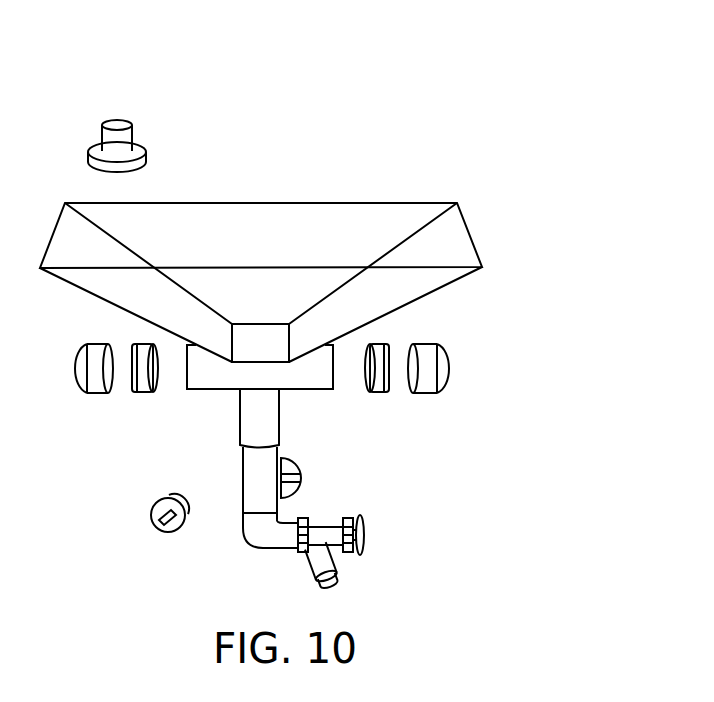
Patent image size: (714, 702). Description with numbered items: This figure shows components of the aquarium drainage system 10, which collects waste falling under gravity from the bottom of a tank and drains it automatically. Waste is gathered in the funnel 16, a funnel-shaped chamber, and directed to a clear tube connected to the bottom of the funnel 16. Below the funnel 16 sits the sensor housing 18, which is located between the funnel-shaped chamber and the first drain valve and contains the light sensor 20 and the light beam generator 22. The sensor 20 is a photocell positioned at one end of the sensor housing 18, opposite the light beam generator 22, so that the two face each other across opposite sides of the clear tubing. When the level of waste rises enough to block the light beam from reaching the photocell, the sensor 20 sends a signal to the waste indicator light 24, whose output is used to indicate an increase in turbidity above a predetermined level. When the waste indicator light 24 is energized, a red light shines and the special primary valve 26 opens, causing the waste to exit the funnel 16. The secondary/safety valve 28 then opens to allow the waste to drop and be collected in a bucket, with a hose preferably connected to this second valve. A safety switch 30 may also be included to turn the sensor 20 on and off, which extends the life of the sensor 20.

The aquarium drainage system 10 is at (467, 122).
The funnel 16 is at (433, 288).
The sensor housing 18 is at (333, 382).
The light sensor 20 is at (145, 393).
The light beam generator 22 is at (375, 393).
The waste indicator light 24 is at (98, 150).
The primary valve 26 is at (303, 465).
The secondary/safety valve 28 is at (364, 525).
The safety switch 30 is at (152, 512).